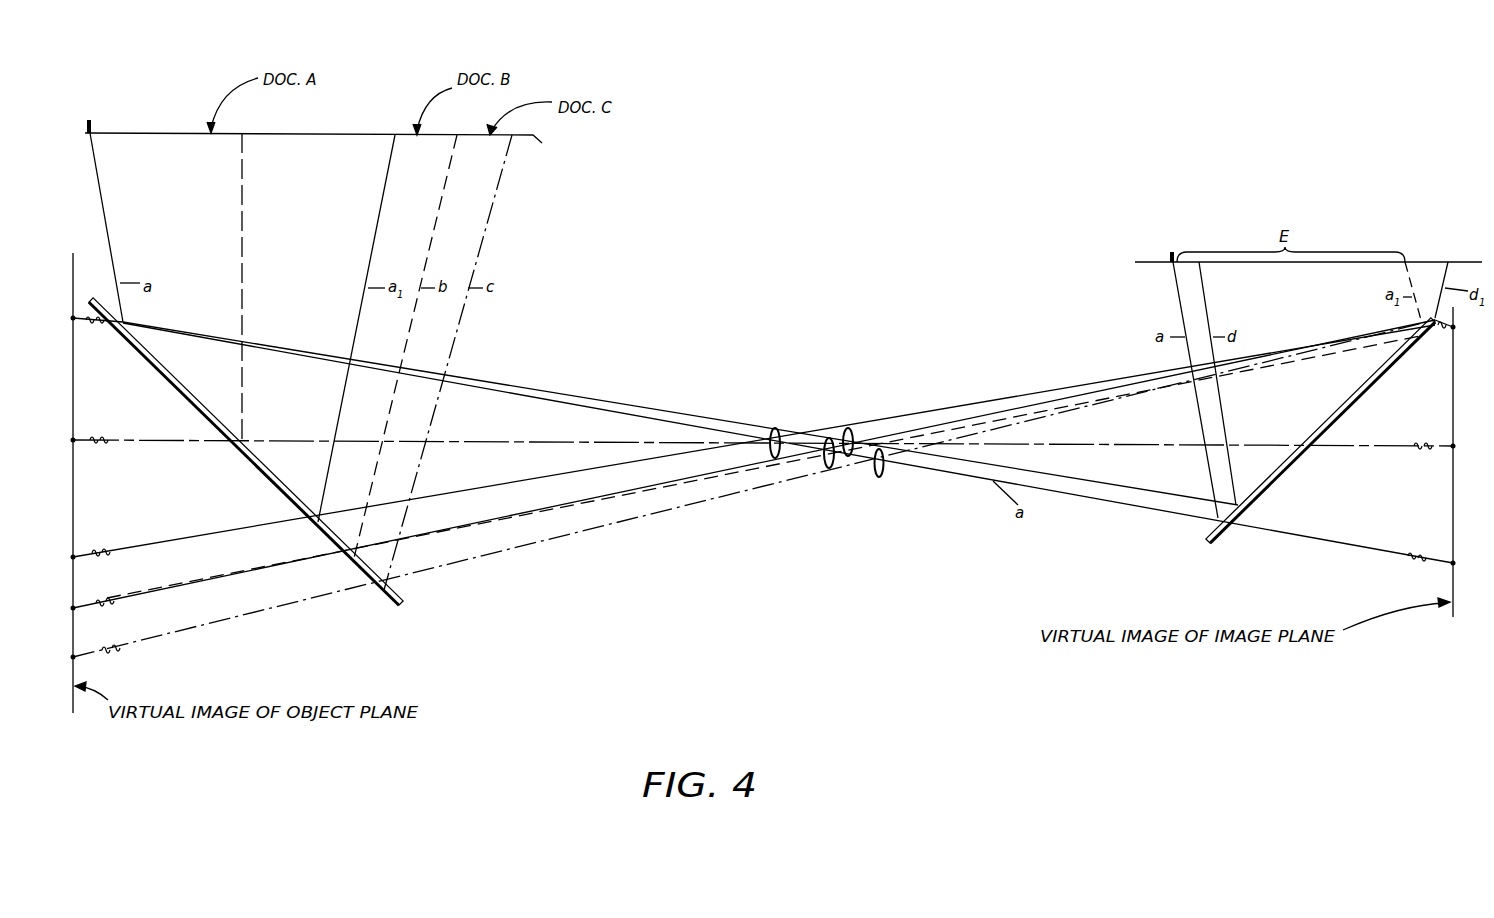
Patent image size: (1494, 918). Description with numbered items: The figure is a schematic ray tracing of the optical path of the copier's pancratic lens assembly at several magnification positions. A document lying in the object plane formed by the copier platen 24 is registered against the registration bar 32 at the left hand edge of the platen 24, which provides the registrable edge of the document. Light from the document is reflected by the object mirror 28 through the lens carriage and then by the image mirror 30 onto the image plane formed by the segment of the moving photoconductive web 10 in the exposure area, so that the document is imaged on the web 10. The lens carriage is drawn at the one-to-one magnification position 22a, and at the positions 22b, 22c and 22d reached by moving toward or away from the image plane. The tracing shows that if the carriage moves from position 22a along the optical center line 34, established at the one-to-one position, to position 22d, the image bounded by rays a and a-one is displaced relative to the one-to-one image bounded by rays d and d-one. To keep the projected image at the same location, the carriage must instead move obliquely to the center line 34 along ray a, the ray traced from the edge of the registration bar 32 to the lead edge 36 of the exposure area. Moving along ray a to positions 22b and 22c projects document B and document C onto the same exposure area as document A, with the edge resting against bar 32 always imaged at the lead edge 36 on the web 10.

The photoconductive web 10 is at (1141, 265).
The copier platen 24 is at (545, 143).
The object mirror 28 is at (406, 598).
The image mirror 30 is at (1203, 537).
The registration bar 32 is at (91, 120).
The optical center line 34 is at (112, 442).
The lead edge 36 is at (1169, 252).
The lens carriage position 22a is at (773, 428).
The lens carriage position 22b is at (826, 458).
The lens carriage position 22c is at (881, 477).
The lens carriage position 22d is at (849, 428).